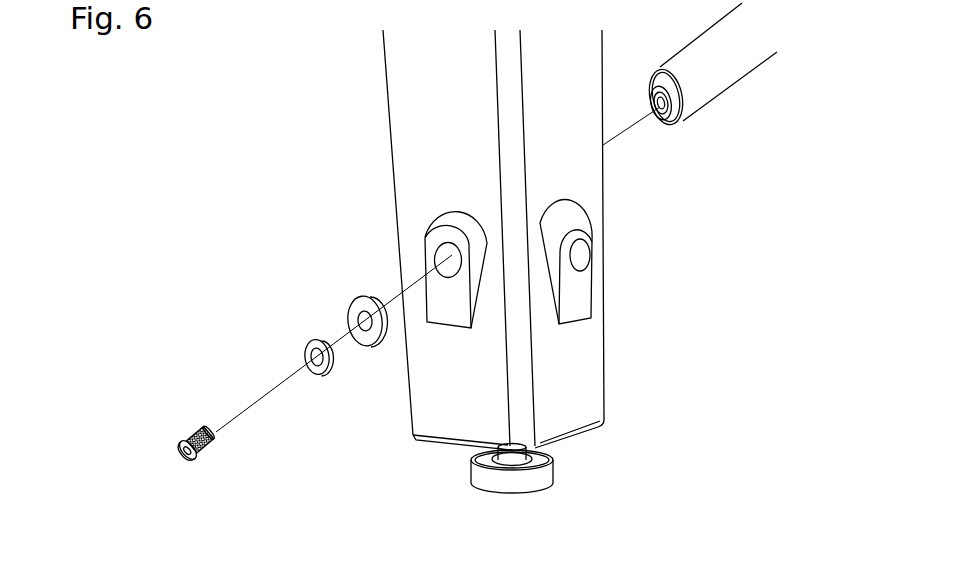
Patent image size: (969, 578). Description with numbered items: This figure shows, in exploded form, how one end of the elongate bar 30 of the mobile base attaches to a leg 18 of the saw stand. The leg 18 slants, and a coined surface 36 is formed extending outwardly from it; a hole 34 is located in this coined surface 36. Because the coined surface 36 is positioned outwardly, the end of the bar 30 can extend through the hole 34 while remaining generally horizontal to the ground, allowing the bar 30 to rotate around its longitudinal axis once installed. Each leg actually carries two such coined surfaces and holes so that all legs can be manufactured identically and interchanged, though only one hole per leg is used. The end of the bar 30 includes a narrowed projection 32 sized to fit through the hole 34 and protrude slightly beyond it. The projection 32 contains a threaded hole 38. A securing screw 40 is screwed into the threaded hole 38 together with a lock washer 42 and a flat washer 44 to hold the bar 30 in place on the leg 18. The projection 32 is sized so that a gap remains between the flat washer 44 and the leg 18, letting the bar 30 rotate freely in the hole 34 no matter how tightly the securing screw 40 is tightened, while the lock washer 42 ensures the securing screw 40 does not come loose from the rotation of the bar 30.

The leg 18 is at (425, 100).
The elongate bar 30 is at (724, 122).
The narrowed projection 32 is at (672, 114).
The hole 34 is at (443, 255).
The coined surface 36 is at (395, 221).
The threaded hole 38 is at (660, 110).
The securing screw 40 is at (197, 417).
The lock washer 42 is at (322, 383).
The flat washer 44 is at (345, 295).